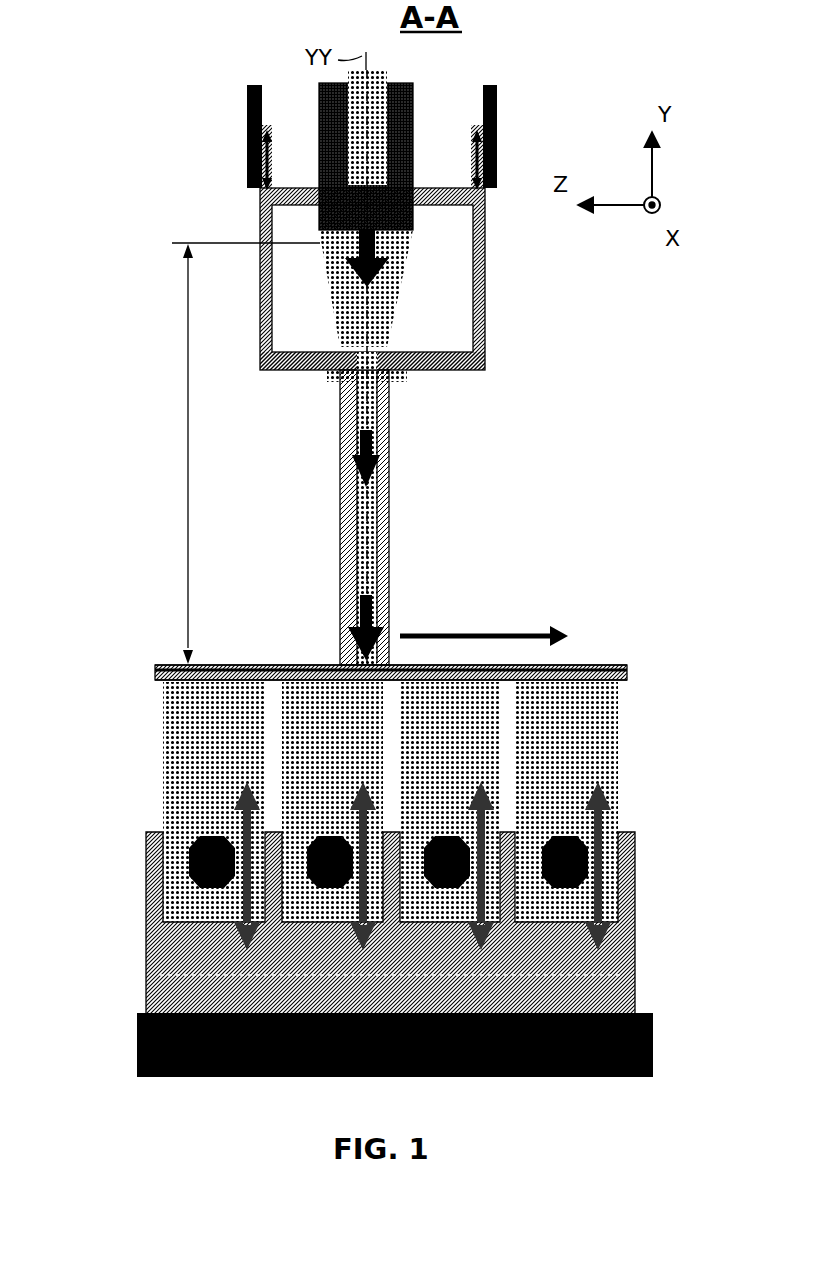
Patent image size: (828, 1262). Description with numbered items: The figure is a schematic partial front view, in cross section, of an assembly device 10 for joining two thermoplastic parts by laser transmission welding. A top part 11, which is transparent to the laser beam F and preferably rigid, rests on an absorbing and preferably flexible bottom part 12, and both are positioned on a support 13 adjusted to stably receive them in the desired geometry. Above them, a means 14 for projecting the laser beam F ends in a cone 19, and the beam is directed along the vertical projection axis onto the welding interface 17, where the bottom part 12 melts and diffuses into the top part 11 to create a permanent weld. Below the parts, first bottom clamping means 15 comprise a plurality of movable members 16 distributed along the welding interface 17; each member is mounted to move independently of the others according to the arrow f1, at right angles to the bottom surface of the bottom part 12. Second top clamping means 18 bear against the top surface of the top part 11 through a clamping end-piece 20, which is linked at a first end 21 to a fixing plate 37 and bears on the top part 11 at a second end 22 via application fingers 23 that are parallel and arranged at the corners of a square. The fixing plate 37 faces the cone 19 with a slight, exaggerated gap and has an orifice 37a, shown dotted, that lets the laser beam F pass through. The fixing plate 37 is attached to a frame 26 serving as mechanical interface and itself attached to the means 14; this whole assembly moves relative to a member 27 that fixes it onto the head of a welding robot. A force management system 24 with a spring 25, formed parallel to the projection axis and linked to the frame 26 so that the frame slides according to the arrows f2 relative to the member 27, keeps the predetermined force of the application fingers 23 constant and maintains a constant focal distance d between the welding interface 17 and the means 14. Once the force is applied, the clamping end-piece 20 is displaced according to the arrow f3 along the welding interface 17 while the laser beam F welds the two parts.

The assembly device 10 is at (146, 370).
The top part 11 is at (580, 665).
The bottom part 12 is at (593, 683).
The support 13 is at (129, 1001).
The means for projecting a laser beam 14 is at (462, 208).
The first bottom clamping means 15 is at (656, 822).
The movable members 16 is at (328, 775).
The welding interface 17 is at (266, 665).
The second top clamping means 18 is at (513, 453).
The cone 19 is at (383, 318).
The clamping end-piece 20 is at (393, 510).
The first end 21 is at (330, 373).
The second end 22 is at (342, 665).
The application fingers 23 is at (380, 572).
The force management system 24 is at (453, 88).
The spring 25 is at (372, 130).
The frame 26 is at (417, 222).
The mechanical interface member 27 is at (247, 100).
The fixing plate 37 is at (271, 371).
The orifice 37a is at (380, 372).
The arrow f1 is at (477, 904).
The arrows f2 is at (247, 182).
The arrow f3 is at (484, 628).
The laser beam F is at (368, 285).
The focal distance d is at (240, 453).